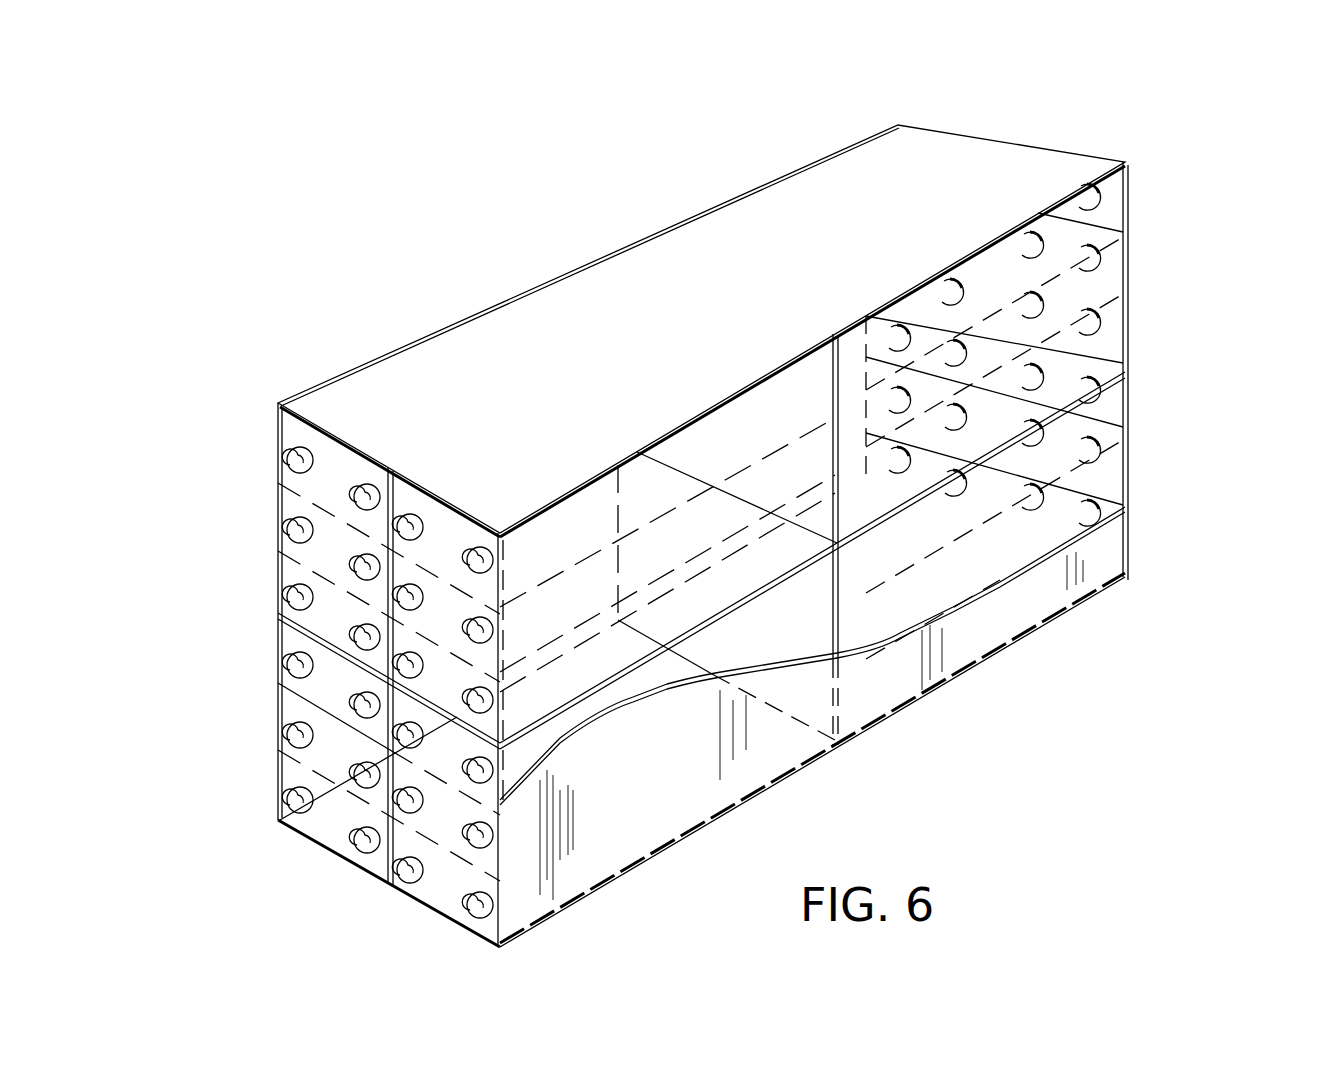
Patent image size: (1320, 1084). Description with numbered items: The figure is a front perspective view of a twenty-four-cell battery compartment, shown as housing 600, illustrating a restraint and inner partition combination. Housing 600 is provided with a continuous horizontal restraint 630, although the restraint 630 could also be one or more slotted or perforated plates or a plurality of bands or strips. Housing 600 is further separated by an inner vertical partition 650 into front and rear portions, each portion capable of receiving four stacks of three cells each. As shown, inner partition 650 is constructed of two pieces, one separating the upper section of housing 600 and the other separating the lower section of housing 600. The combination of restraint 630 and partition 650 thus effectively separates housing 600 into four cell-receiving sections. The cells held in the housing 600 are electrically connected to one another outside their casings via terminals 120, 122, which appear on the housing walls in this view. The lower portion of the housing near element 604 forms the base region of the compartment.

The housing 600 is at (383, 235).
The terminal 120 is at (362, 497).
The terminal 122 is at (362, 570).
The horizontal restraint 630 is at (1060, 363).
The inner vertical partition 650 is at (838, 385).
The base 604 is at (1107, 538).